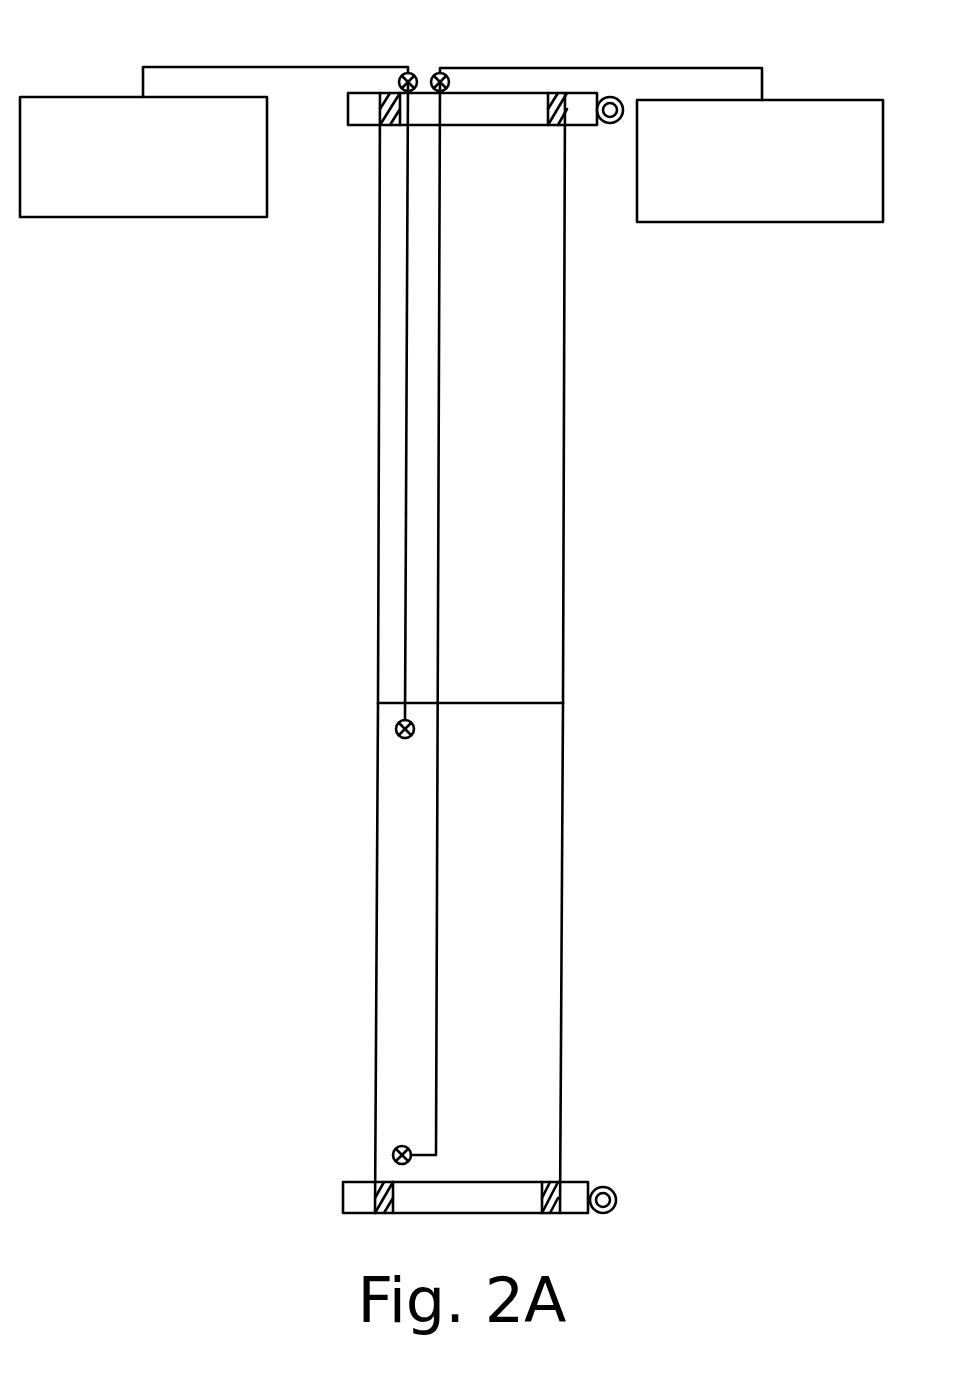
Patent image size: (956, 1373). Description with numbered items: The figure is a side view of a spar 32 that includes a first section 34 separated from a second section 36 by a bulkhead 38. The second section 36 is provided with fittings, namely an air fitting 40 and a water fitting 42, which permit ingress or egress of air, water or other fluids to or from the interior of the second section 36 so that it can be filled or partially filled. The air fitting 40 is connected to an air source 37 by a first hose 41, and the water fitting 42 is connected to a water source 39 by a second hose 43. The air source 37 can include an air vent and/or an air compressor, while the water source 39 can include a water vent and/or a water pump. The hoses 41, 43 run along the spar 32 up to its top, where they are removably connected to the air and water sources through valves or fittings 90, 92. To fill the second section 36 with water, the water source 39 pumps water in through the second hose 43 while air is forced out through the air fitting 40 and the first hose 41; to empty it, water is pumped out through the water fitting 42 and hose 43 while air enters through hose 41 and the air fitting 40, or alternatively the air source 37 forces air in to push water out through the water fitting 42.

The spar 32 is at (541, 613).
The first section 34 is at (377, 508).
The second section 36 is at (376, 1005).
The air source 37 is at (118, 174).
The bulkhead 38 is at (565, 703).
The water source 39 is at (737, 177).
The air fitting 40 is at (410, 737).
The first hose 41 is at (404, 262).
The water fitting 42 is at (402, 1146).
The second hose 43 is at (440, 247).
The fitting 90 is at (399, 80).
The fitting 92 is at (449, 81).